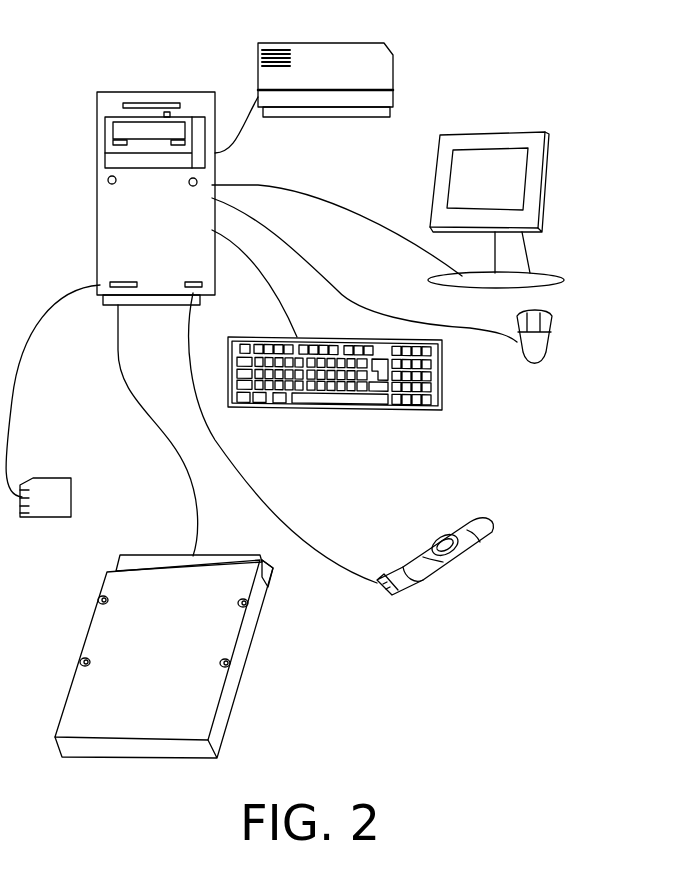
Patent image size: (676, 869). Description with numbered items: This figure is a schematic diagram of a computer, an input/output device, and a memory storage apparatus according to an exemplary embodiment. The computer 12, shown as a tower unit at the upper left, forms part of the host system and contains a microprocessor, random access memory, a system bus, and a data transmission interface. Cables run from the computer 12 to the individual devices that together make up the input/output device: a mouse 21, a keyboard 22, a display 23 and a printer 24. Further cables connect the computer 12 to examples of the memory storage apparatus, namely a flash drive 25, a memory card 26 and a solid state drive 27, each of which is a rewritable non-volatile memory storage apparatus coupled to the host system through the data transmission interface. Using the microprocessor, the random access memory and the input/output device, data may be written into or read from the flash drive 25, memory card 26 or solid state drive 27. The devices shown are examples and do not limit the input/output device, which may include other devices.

The computer 12 is at (158, 92).
The mouse 21 is at (552, 343).
The keyboard 22 is at (441, 388).
The display 23 is at (500, 132).
The printer 24 is at (322, 43).
The flash drive 25 is at (428, 541).
The memory card 26 is at (72, 488).
The solid state drive 27 is at (219, 537).